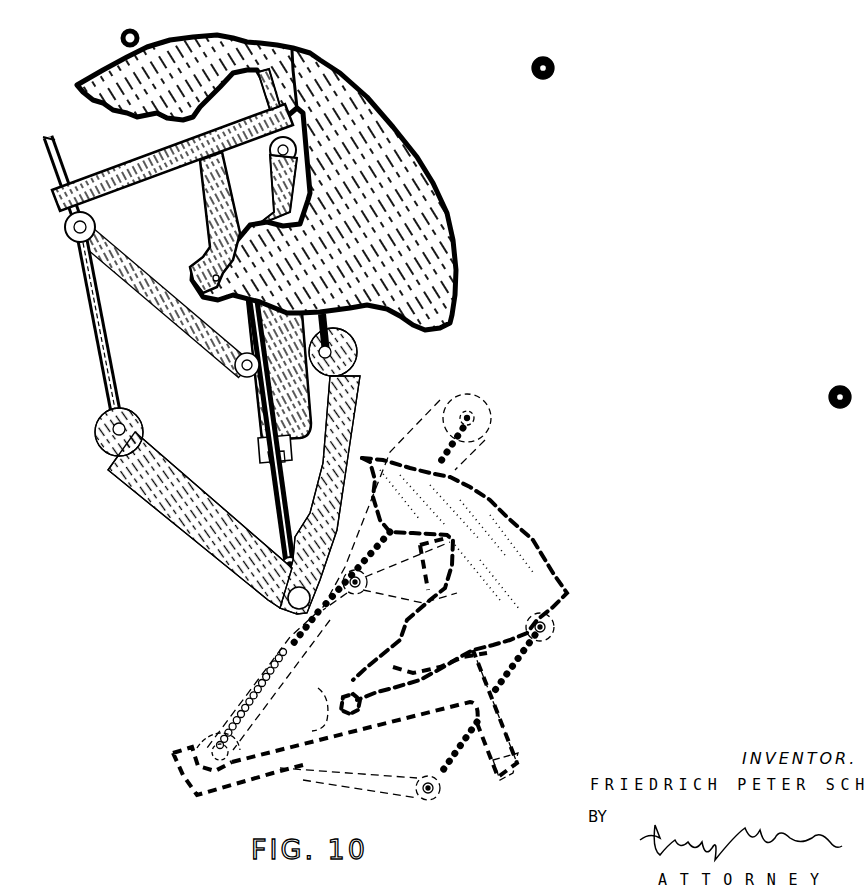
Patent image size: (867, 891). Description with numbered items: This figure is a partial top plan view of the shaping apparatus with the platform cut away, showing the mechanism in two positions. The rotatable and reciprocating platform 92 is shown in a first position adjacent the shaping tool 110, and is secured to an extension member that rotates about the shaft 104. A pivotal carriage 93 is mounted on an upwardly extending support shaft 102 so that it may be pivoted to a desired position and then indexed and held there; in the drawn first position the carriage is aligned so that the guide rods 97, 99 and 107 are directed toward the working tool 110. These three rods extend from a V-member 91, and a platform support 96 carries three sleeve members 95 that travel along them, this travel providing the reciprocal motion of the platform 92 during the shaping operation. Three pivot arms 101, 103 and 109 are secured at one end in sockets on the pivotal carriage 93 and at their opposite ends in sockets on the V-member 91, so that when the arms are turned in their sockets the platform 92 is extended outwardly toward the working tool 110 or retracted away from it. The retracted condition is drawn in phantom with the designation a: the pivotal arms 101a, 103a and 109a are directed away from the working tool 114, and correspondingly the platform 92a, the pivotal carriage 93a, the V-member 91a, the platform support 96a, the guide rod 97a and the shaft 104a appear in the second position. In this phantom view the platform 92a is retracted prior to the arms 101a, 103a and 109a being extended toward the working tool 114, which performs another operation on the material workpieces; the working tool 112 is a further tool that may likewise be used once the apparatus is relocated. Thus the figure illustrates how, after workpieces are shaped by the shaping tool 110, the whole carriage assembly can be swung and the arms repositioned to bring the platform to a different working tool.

The platform 92 is at (455, 267).
The platform in retracted position 92a is at (520, 540).
The guide rod 97 is at (287, 90).
The guide rod in phantom position 97a is at (465, 783).
The platform support 96 is at (211, 217).
The platform support in phantom position 96a is at (232, 783).
The sleeve member 95 is at (137, 160).
The shaft 104 is at (214, 255).
The shaft in phantom position 104a is at (347, 680).
The guide rod 107 is at (56, 170).
The pivot arm 109 is at (92, 323).
The pivot arm in phantom position 109a is at (447, 440).
The V-member 91 is at (197, 342).
The V-member in phantom position 91a is at (313, 780).
The guide rod 99 is at (247, 387).
The pivot arm 103 is at (268, 493).
The pivot arm in phantom position 103a is at (287, 630).
The pivotal carriage 93 is at (127, 477).
The pivotal carriage in phantom position 93a is at (433, 393).
The pivot arm 101 is at (330, 322).
The pivot arm in phantom position 101a is at (497, 665).
The support shaft 102 is at (287, 614).
The shaping tool 110 is at (122, 42).
The working tool 112 is at (553, 72).
The working tool 114 is at (838, 406).